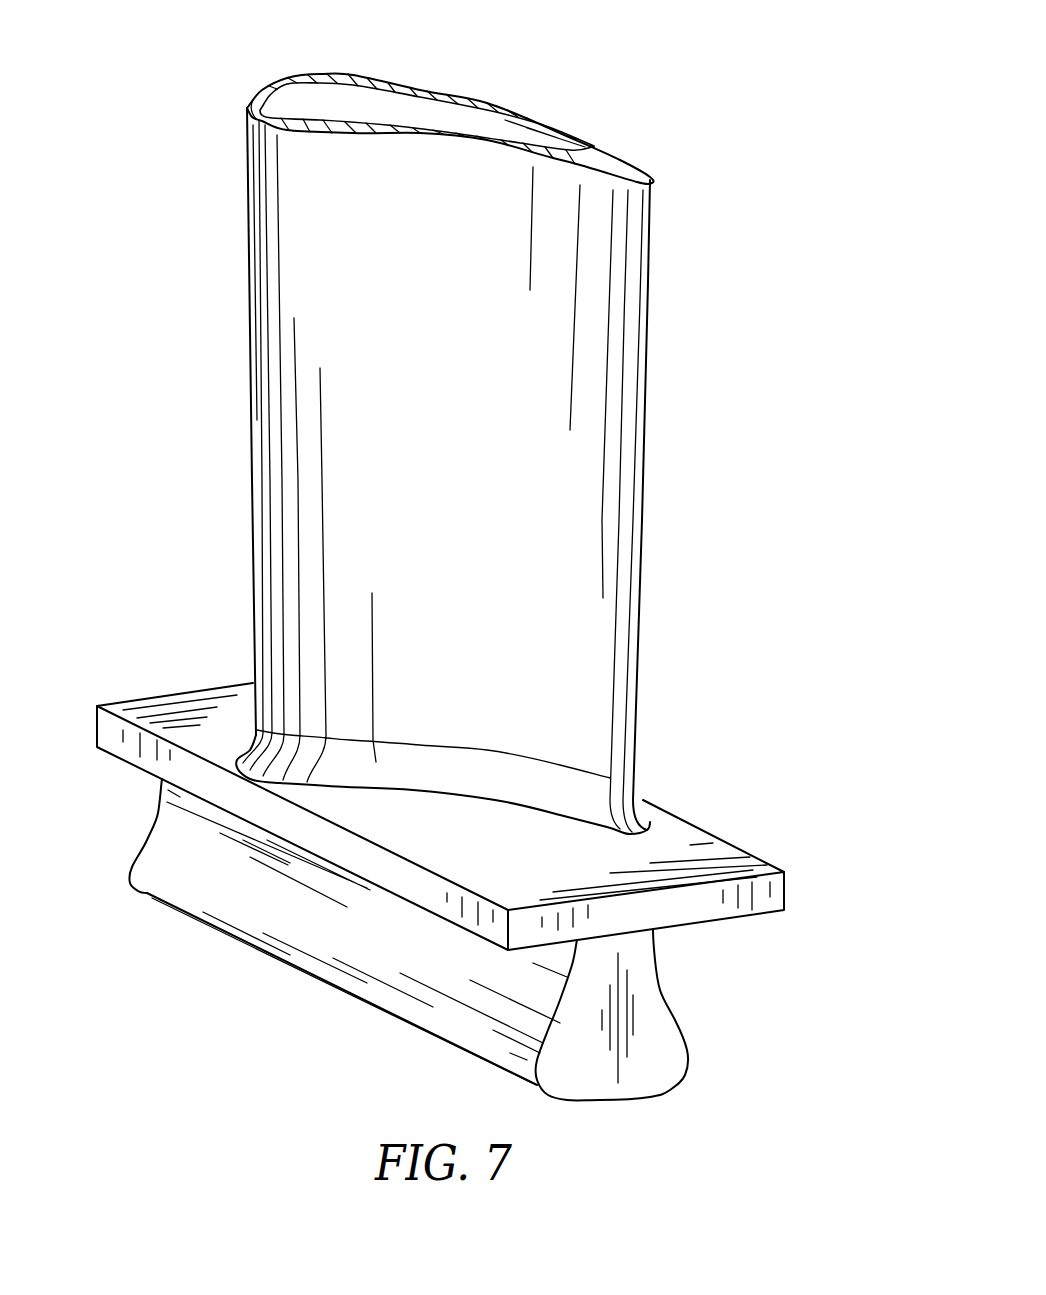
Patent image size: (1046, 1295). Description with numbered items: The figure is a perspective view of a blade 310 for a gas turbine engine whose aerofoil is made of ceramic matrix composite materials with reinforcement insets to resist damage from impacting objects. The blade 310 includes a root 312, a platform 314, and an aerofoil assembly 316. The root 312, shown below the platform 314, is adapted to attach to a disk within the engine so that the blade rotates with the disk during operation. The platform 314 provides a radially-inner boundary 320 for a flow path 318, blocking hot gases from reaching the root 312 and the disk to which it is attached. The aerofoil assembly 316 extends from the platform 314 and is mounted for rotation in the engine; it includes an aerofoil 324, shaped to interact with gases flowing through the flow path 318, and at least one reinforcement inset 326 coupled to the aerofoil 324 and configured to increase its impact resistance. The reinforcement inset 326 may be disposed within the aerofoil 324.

The blade 310 is at (684, 93).
The root 312 is at (696, 986).
The platform 314 is at (754, 825).
The aerofoil assembly 316 is at (692, 484).
The flow path 318 is at (163, 468).
The radially-inner boundary 320 is at (162, 707).
The aerofoil 324 is at (233, 295).
The reinforcement inset 326 is at (278, 93).